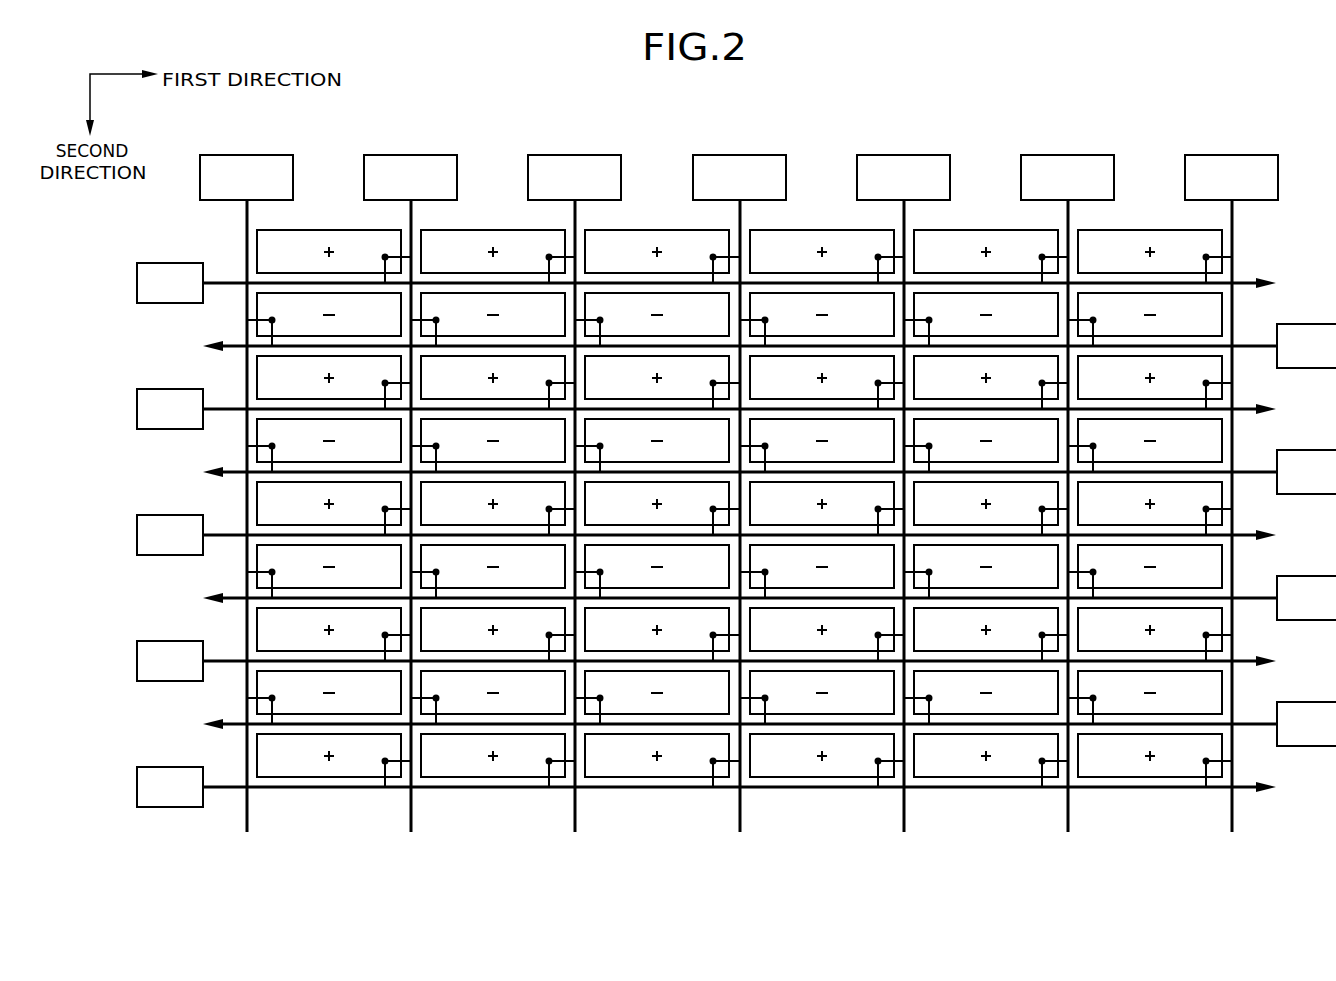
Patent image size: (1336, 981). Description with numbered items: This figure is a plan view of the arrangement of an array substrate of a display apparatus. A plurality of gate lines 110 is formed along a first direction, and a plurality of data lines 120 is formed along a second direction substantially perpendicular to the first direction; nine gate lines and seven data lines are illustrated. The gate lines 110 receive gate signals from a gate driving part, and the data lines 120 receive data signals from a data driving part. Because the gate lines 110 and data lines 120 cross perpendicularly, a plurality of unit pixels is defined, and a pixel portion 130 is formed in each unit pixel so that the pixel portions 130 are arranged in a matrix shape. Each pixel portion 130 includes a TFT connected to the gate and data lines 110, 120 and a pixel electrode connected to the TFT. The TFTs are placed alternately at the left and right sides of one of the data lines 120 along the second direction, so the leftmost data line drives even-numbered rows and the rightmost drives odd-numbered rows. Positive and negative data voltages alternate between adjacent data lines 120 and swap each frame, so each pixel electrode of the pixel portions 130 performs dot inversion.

The gate lines 110 is at (112, 817).
The data lines 120 is at (196, 150).
The pixel portions 130 is at (245, 224).